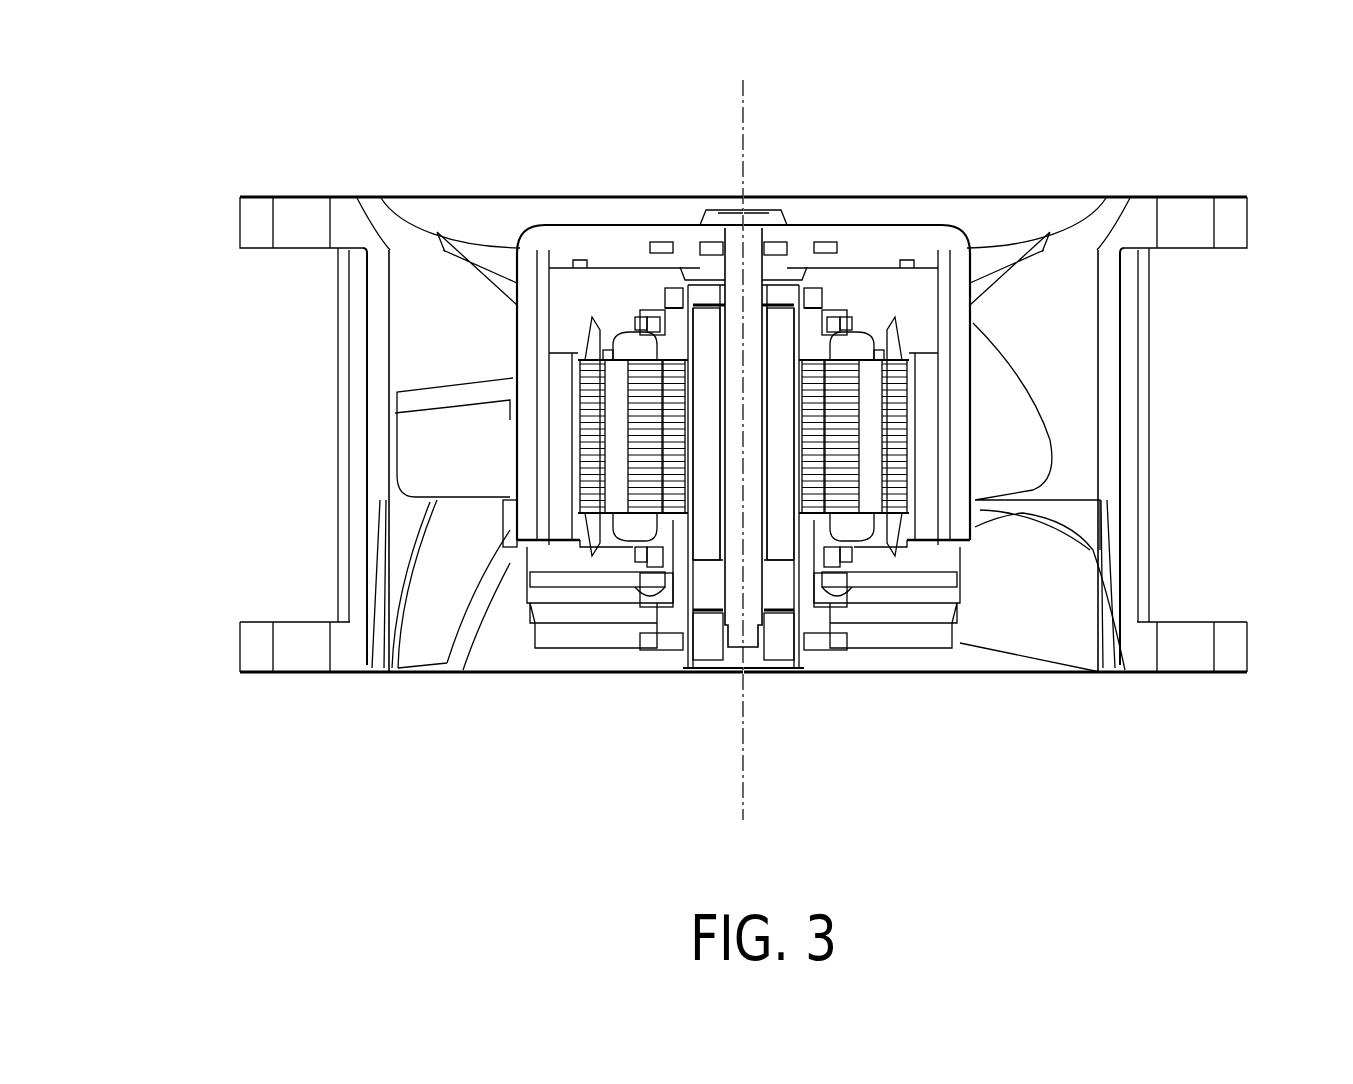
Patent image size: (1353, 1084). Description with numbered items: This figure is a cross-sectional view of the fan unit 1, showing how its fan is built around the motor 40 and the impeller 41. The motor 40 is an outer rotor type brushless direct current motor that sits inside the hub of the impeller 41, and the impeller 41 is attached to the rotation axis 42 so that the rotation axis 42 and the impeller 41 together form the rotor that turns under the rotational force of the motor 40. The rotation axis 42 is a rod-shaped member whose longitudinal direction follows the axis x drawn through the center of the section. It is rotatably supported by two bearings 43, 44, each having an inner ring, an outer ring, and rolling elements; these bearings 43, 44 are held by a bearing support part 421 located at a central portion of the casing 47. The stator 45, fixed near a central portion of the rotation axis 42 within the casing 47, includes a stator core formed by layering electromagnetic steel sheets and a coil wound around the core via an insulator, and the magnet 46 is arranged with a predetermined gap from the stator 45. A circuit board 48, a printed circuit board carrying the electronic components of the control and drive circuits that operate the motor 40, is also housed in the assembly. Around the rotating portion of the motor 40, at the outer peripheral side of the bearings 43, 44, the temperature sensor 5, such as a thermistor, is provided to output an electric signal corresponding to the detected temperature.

The fan unit 1 is at (216, 146).
The motor 40 is at (931, 106).
The impeller 41 is at (510, 376).
The rotation axis 42 is at (772, 446).
The bearing support part 421 is at (796, 505).
The bearing 43 is at (806, 313).
The bearing 44 is at (798, 593).
The stator 45 is at (850, 348).
The magnet 46 is at (543, 393).
The casing 47 is at (329, 571).
The circuit board 48 is at (559, 596).
The temperature sensor 5 is at (654, 285).